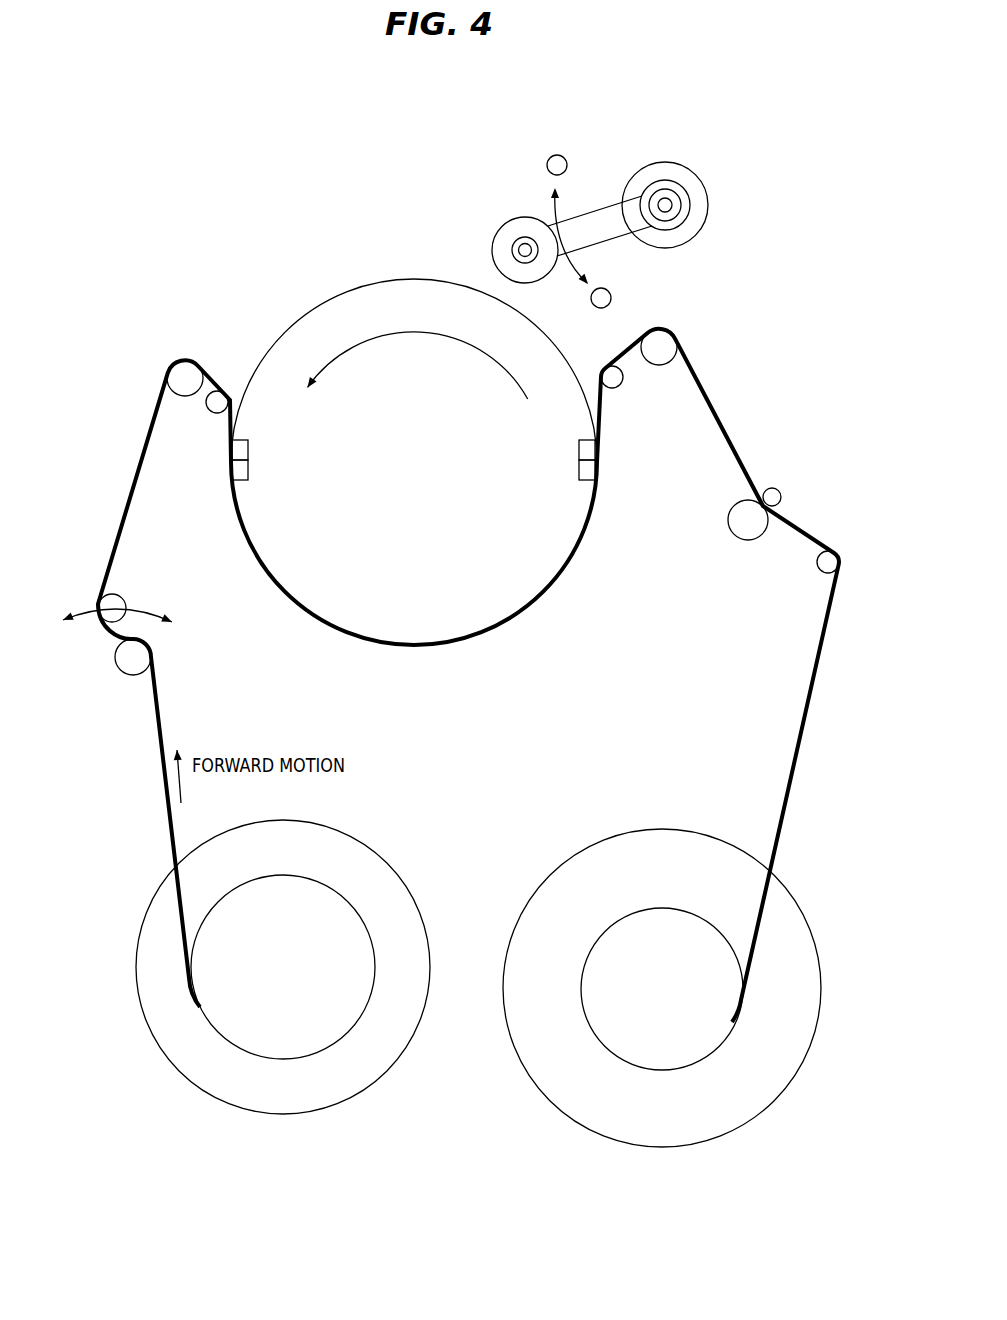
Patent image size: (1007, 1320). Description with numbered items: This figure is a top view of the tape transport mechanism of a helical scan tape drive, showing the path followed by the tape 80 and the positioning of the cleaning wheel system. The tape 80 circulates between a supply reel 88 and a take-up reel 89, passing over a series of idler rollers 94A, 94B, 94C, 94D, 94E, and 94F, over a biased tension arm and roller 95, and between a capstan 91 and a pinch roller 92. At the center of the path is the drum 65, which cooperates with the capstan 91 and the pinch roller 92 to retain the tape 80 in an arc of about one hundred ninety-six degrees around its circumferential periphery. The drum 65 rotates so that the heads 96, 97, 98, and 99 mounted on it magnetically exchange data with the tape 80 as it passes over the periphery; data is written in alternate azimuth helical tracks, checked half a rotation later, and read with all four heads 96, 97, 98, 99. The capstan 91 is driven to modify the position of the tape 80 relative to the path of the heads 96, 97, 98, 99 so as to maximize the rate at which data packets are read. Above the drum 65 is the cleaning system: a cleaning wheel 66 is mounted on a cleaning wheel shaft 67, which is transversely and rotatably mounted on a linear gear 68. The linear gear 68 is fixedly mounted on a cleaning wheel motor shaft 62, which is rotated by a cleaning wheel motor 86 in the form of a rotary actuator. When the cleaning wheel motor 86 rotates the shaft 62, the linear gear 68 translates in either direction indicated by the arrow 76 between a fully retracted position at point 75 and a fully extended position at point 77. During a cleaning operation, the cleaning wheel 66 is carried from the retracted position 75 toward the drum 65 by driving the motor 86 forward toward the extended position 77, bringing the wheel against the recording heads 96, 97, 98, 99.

The cleaning wheel motor shaft 62 is at (678, 202).
The drum 65 is at (297, 322).
The cleaning wheel 66 is at (495, 233).
The cleaning wheel shaft 67 is at (527, 237).
The linear gear 68 is at (593, 207).
The fully retracted position 75 is at (565, 152).
The arrow 76 is at (577, 262).
The fully extended position 77 is at (603, 310).
The tape 80 is at (158, 717).
The cleaning wheel motor 86 is at (687, 163).
The supply reel 88 is at (353, 840).
The take-up reel 89 is at (600, 860).
The capstan 91 is at (728, 515).
The pinch roller 92 is at (776, 488).
The idler roller 94A is at (117, 668).
The idler roller 94B is at (182, 370).
The idler roller 94C is at (213, 412).
The idler roller 94D is at (620, 386).
The idler roller 94E is at (665, 350).
The idler roller 94F is at (820, 555).
The biased tension arm and roller 95 is at (112, 594).
The head 96 is at (282, 435).
The head 97 is at (248, 470).
The head 98 is at (579, 452).
The head 99 is at (579, 470).